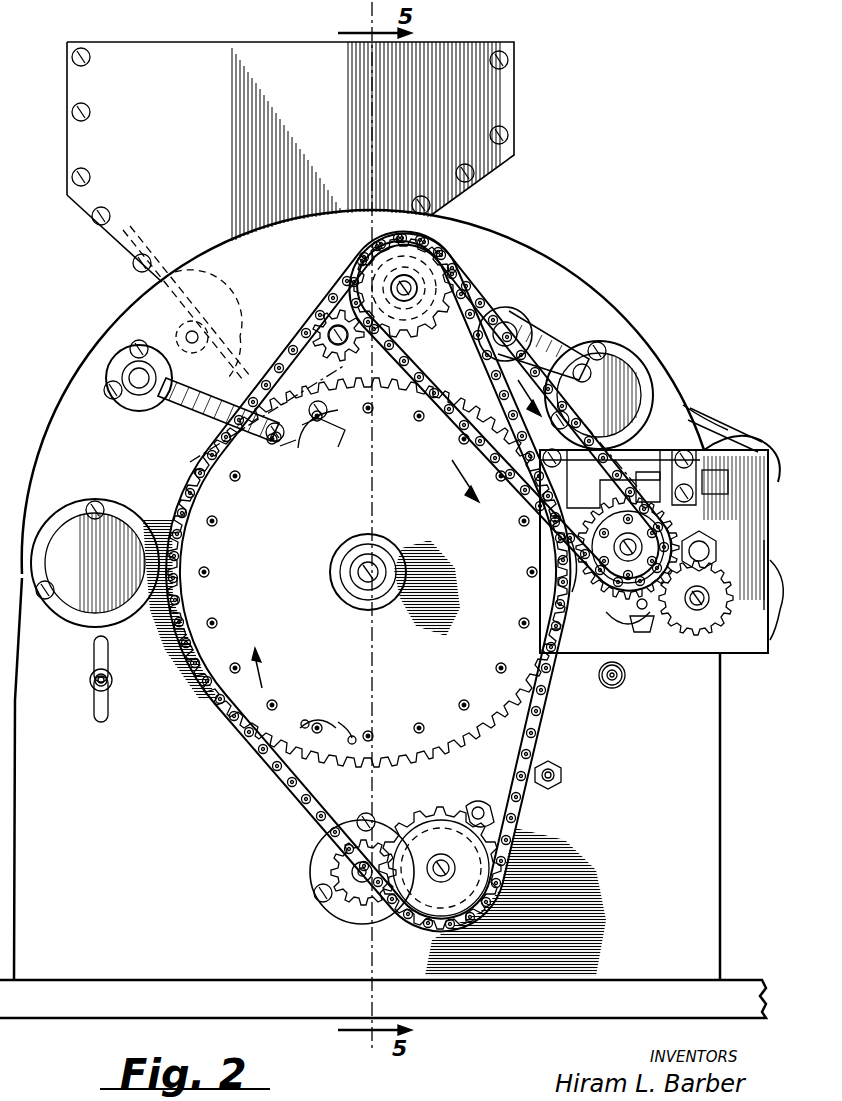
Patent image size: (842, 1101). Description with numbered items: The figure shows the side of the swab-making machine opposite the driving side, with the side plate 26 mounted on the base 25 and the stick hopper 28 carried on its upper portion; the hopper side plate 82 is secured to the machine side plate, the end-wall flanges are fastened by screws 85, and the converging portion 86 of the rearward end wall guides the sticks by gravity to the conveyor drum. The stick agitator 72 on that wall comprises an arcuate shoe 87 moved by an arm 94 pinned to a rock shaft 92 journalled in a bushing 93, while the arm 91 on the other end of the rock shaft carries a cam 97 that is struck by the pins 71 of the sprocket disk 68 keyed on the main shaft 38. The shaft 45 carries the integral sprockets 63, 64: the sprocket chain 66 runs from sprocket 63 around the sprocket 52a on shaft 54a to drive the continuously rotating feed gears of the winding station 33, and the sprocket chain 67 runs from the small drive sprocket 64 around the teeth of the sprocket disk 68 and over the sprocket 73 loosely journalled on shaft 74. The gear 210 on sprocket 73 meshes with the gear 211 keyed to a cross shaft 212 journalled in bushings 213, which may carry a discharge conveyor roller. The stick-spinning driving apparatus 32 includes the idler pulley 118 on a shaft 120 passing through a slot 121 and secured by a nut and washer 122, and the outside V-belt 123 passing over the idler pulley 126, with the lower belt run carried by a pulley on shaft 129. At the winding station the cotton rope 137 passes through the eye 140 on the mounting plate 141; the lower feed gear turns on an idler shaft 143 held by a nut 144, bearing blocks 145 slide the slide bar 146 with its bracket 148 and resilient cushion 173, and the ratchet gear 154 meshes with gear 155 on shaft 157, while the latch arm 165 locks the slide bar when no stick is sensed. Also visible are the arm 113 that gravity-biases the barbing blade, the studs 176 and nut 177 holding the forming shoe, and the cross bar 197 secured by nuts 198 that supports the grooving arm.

The base 25 is at (656, 990).
The side plate 26 is at (62, 410).
The stick hopper 28 is at (497, 102).
The driving apparatus 32 is at (742, 424).
The winding station 33 is at (741, 660).
The shaft 38 is at (366, 590).
The shaft 45 is at (412, 302).
The sprocket 52a is at (616, 567).
The shaft 54a is at (637, 545).
The sprocket 63 is at (456, 277).
The small drive sprocket 64 is at (440, 251).
The sprocket chain 66 is at (490, 318).
The sprocket chain 67 is at (186, 488).
The sprocket disk 68 is at (486, 730).
The pins 71 is at (281, 448).
The stick agitator 72 is at (205, 294).
The sprocket 73 is at (448, 812).
The shaft 74 is at (454, 866).
The side plate 82 is at (85, 145).
The screws 85 is at (110, 212).
The converging portion 86 is at (140, 234).
The arcuate shoe 87 is at (232, 322).
The arm 91 is at (204, 404).
The rock shaft 92 is at (135, 390).
The bushing 93 is at (118, 360).
The arm 94 is at (174, 342).
The cam 97 is at (318, 432).
The arm 113 is at (556, 352).
The idler pulley 118 is at (100, 656).
The shaft 120 is at (113, 680).
The slot 121 is at (108, 712).
The nut and washer 122 is at (95, 686).
The outside V-belt 123 is at (696, 418).
The idler pulley 126 is at (752, 443).
The shaft 129 is at (482, 804).
The cotton rope 137 is at (778, 620).
The eye 140 is at (764, 560).
The mounting plate 141 is at (690, 655).
The idler shaft 143 is at (630, 607).
The nut 144 is at (645, 612).
The bearing blocks 145 is at (678, 452).
The slide bar 146 is at (658, 472).
The bracket 148 is at (600, 476).
The gear 154 is at (572, 566).
The gear 155 is at (712, 616).
The shaft 157 is at (710, 599).
The latch arm 165 is at (612, 448).
The cushion 173 is at (722, 488).
The studs 176 is at (622, 680).
The nut 177 is at (600, 680).
The cross bar 197 is at (560, 782).
The nuts 198 is at (557, 767).
The gear 210 is at (427, 822).
The gear 211 is at (338, 874).
The cross shaft 212 is at (358, 882).
The bushings 213 is at (347, 914).